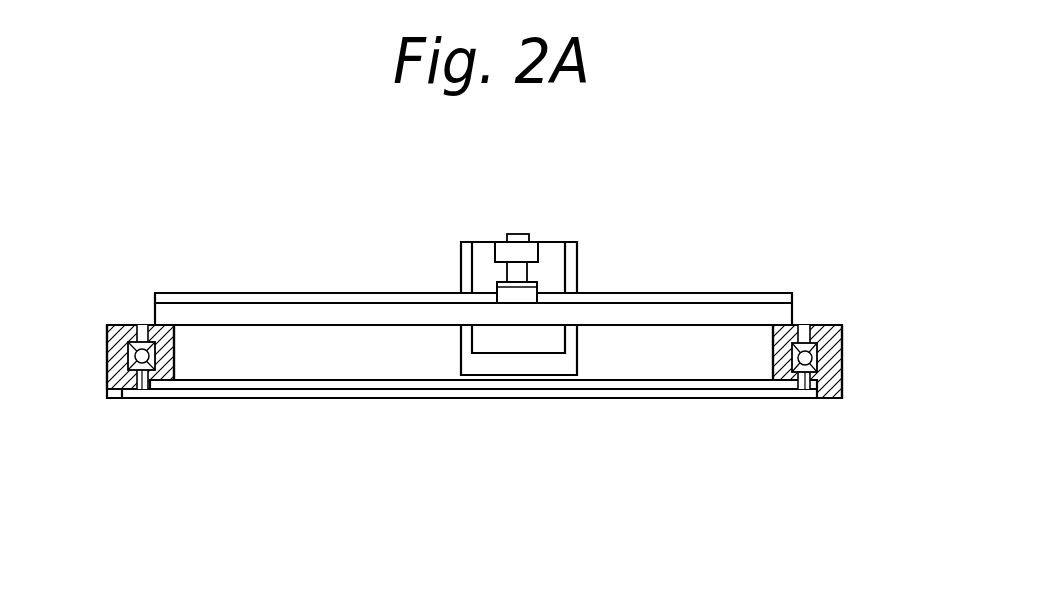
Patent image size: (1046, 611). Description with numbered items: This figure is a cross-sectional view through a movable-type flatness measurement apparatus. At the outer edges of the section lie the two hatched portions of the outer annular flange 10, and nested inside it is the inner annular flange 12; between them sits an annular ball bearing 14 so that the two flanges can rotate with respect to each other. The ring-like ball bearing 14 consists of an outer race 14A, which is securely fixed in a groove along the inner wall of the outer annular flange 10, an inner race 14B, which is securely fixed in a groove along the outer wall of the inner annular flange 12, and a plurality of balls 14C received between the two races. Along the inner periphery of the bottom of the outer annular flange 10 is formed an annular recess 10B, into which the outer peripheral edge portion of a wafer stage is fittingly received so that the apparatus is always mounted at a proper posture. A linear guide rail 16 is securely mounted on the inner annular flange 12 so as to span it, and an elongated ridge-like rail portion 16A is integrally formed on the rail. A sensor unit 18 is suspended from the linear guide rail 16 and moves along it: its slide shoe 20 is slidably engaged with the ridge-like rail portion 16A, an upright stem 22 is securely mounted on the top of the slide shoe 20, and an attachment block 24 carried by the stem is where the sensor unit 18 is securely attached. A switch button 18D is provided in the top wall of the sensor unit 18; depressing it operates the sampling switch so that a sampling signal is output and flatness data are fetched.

The outer annular flange 10 is at (845, 360).
The annular recess 10B is at (667, 396).
The inner annular flange 12 is at (178, 348).
The annular ball bearing 14 is at (824, 325).
The outer race 14A is at (125, 362).
The inner race 14B is at (773, 353).
The balls 14C is at (138, 370).
The linear guide rail 16 is at (701, 291).
The ridge-like rail portion 16A is at (330, 297).
The sensor unit 18 is at (581, 251).
The switch button 18D is at (517, 234).
The slide shoe 20 is at (517, 297).
The upright stem 22 is at (523, 277).
The attachment block 24 is at (532, 250).